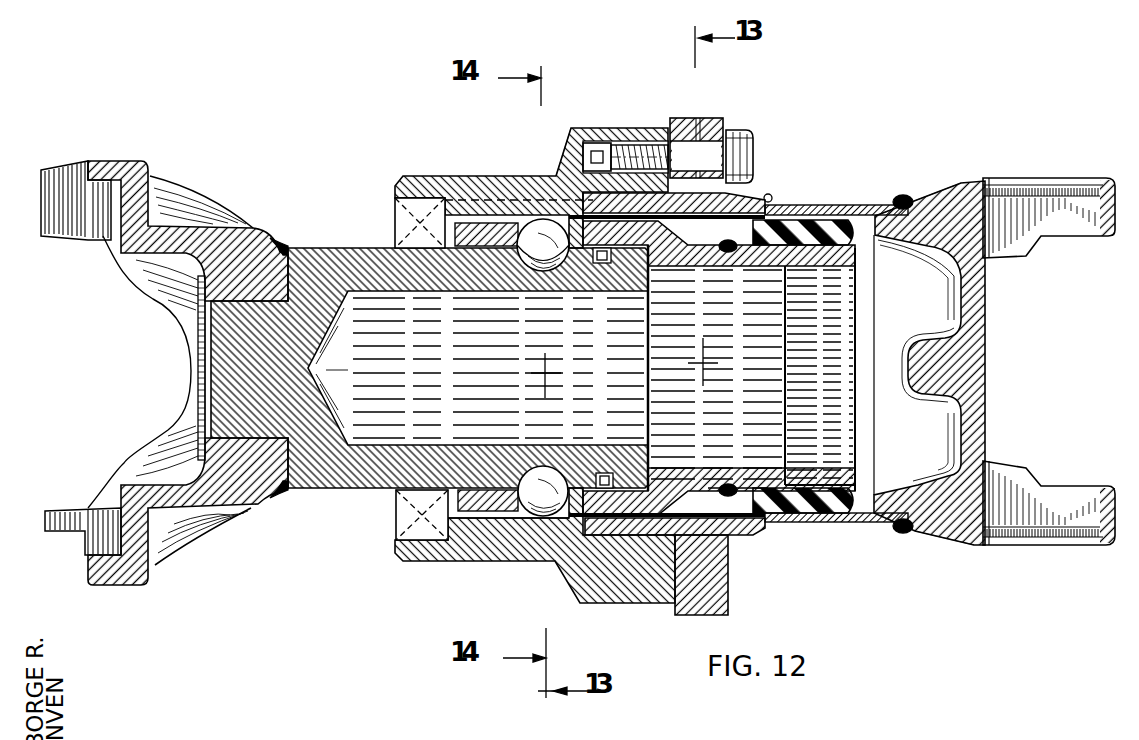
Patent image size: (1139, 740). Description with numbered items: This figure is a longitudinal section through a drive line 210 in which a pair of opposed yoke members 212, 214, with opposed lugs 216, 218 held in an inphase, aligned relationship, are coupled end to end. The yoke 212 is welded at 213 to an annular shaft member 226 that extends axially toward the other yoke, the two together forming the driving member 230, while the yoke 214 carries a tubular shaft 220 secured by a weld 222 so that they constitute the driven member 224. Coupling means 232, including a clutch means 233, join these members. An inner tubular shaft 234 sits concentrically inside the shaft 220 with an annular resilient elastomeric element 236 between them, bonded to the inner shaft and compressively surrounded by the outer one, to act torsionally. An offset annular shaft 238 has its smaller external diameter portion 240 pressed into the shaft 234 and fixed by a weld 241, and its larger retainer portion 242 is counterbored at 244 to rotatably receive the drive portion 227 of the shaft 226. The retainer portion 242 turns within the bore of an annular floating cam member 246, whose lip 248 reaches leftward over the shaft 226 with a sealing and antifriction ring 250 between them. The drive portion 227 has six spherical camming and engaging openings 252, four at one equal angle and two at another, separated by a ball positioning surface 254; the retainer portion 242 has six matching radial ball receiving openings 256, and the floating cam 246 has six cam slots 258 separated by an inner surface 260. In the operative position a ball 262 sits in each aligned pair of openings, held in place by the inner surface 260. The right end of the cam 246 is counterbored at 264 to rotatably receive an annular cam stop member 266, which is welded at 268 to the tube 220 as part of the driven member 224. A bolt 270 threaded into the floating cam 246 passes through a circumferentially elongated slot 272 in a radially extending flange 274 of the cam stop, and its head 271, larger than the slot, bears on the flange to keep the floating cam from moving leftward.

The drive line 210 is at (789, 170).
The yoke member 212 is at (100, 162).
The weld 213 is at (270, 238).
The yoke member 214 is at (963, 521).
The lug 216 is at (54, 172).
The lug 218 is at (1100, 538).
The tubular shaft 220 is at (813, 514).
The weld 222 is at (893, 524).
The driven member 224 is at (930, 184).
The annular shaft member 226 is at (429, 368).
The drive portion 227 is at (497, 457).
The driving member 230 is at (271, 201).
The coupling means 232 is at (572, 285).
The clutch means 233 is at (527, 522).
The tubular shaft 234 is at (789, 474).
The annular resilient elastomeric element 236 is at (803, 364).
The offset annular shaft 238 is at (719, 377).
The smaller external diameter portion 240 is at (768, 466).
The weld 241 is at (727, 477).
The retainer portion 242 is at (473, 238).
The counterbore 244 is at (618, 240).
The floating cam member 246 is at (580, 365).
The lip 248 is at (413, 180).
The sealing and antifriction ring 250 is at (403, 215).
The spherical camming and engaging openings 252 is at (530, 263).
The surface 254 is at (545, 458).
The ball receiving openings 256 is at (488, 476).
The cam slots 258 is at (474, 207).
The inner surface 260 is at (531, 211).
The ball 262 is at (584, 256).
The counterbore 264 is at (561, 170).
The cam stop member 266 is at (674, 397).
The weld 268 is at (776, 183).
The bolt 270 is at (643, 135).
The head 271 is at (730, 150).
The circumferentially elongated slot 272 is at (690, 113).
The radially extending flange 274 is at (697, 113).